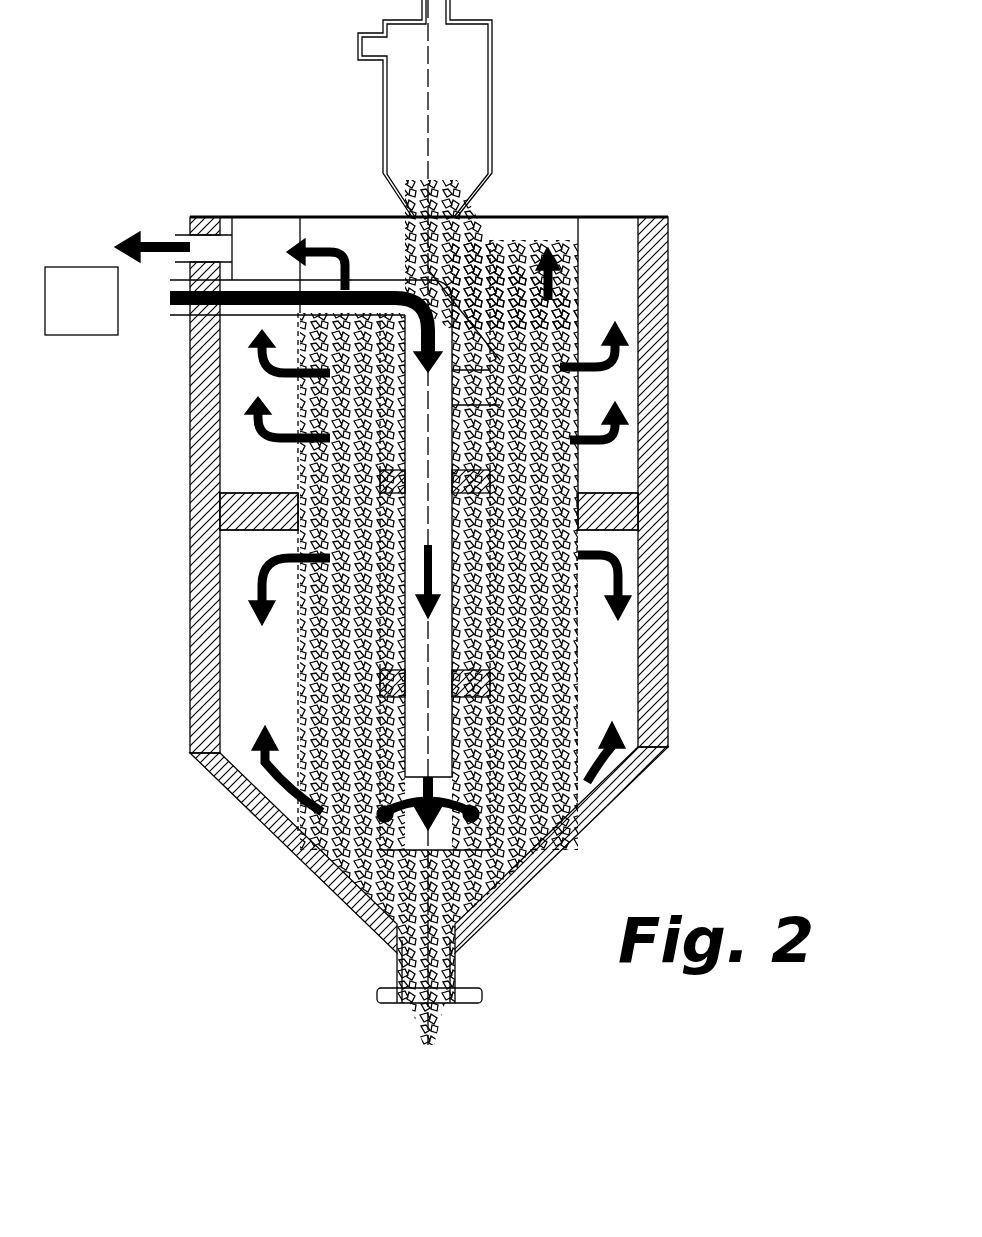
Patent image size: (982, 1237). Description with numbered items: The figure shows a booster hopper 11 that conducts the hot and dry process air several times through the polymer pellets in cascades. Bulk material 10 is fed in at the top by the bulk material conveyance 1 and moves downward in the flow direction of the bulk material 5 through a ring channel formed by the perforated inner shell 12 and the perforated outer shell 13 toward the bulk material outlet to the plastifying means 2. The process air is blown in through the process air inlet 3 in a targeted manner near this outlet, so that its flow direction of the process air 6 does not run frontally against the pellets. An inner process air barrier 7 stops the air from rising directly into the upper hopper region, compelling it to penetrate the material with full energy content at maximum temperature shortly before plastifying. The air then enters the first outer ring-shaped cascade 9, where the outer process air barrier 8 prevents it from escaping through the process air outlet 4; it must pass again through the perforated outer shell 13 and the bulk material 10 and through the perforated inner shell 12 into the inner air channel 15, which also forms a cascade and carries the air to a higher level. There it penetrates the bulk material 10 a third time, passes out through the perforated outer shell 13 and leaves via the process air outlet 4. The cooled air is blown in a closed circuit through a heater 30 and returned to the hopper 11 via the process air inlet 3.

The bulk material conveyance 1 is at (445, 165).
The bulk material outlet to the plastifying means 2 is at (397, 1003).
The process air inlet 3 is at (245, 318).
The process air outlet 4 is at (187, 233).
The flow direction of the bulk material 5 is at (580, 293).
The flow direction of the process air 6 is at (627, 367).
The inner process air barrier 7 is at (300, 640).
The outer process air barrier 8 is at (218, 497).
The cascade with ring-shaped process air flow 9 is at (203, 546).
The bulk material 10 is at (520, 260).
The booster hopper 11 is at (650, 770).
The perforated inner shell 12 is at (577, 727).
The perforated outer shell 13 is at (580, 478).
The inner air channel 15 is at (583, 398).
The heater 30 is at (175, 300).